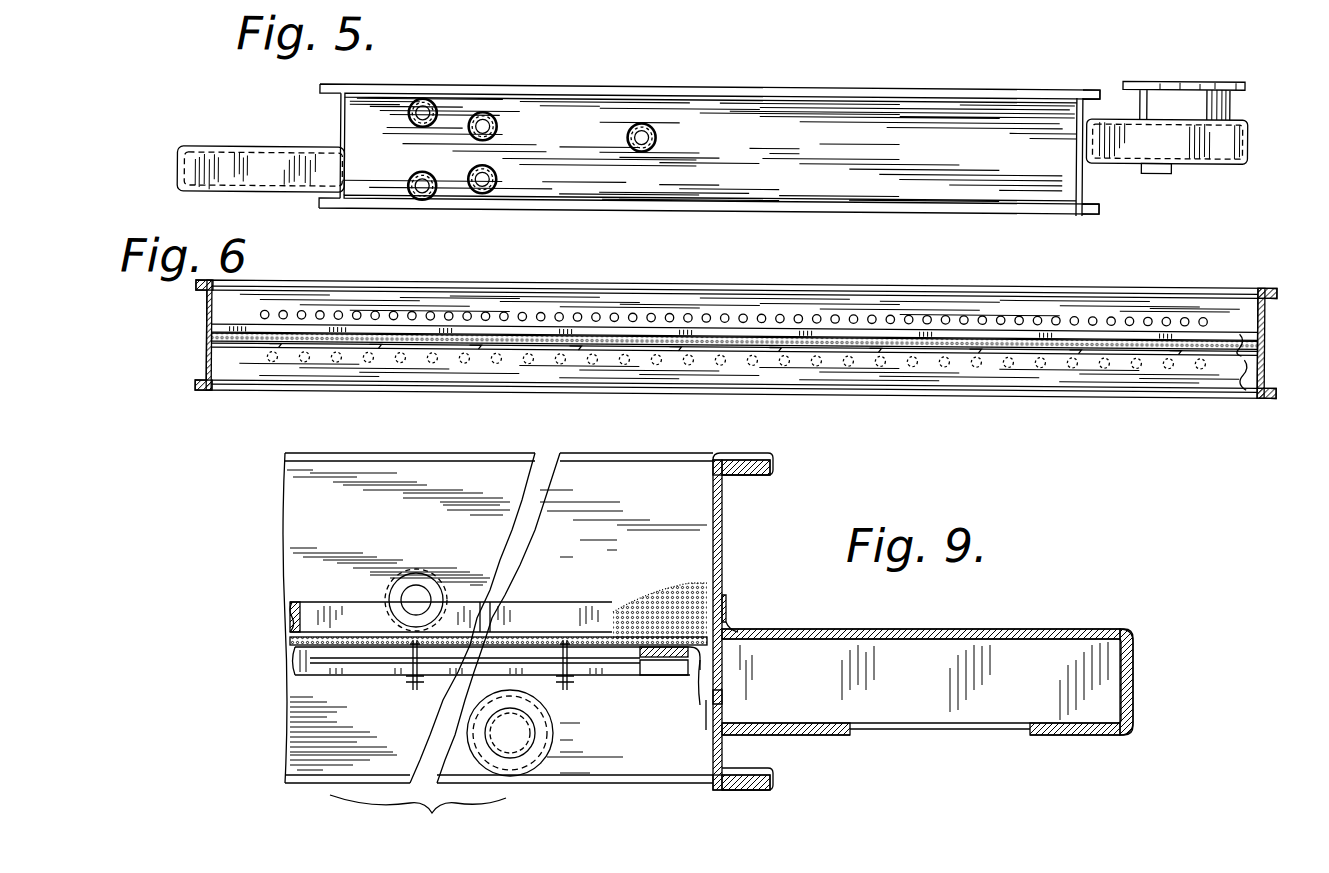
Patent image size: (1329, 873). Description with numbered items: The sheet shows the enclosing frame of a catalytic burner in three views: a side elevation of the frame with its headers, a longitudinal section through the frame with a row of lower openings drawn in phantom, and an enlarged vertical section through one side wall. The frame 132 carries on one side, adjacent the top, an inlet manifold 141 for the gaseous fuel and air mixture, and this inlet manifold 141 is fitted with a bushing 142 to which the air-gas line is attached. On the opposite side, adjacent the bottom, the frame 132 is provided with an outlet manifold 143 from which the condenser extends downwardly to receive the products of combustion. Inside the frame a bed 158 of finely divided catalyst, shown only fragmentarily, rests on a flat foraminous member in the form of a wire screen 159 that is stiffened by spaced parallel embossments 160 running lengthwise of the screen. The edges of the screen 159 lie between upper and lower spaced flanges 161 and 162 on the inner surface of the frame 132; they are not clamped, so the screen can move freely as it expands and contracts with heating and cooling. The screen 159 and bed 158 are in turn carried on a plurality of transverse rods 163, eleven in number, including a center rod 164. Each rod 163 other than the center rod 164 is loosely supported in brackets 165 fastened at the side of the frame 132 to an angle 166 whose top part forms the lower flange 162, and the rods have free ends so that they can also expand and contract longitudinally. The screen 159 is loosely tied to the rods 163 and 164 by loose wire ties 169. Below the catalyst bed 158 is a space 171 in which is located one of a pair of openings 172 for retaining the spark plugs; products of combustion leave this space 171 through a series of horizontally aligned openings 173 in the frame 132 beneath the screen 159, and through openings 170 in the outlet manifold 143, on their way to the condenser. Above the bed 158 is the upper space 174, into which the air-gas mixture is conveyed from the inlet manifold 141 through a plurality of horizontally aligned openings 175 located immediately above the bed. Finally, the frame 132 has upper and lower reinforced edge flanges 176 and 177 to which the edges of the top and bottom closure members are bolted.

In FIG. 5, the frame 132 is at (709, 150).
In FIG. 6, the frame 132 is at (641, 292).
In FIG. 9, the frame 132 is at (722, 545).
In FIG. 5, the inlet manifold 141 is at (1200, 156).
In FIG. 5, the bushing 142 is at (1230, 100).
In FIG. 5, the outlet manifold 143 is at (224, 158).
In FIG. 9, the outlet manifold 143 is at (956, 628).
In FIG. 9, the bed of finely divided catalyst 158 is at (652, 583).
In FIG. 6, the foraminous member (wire screen) 159 is at (248, 331).
In FIG. 9, the foraminous member (wire screen) 159 is at (514, 638).
In FIG. 9, the embossments 160 is at (410, 650).
In FIG. 6, the upper flange 161 is at (1240, 326).
In FIG. 9, the upper flange 161 is at (716, 598).
In FIG. 9, the lower flange 162 is at (690, 684).
In FIG. 6, the transverse rods 163 is at (357, 348).
In FIG. 9, the transverse rods 163 is at (574, 686).
In FIG. 6, the center rod 164 is at (740, 352).
In FIG. 9, the center rod 164 is at (492, 661).
In FIG. 6, the brackets 165 is at (467, 348).
In FIG. 9, the brackets 165 is at (680, 668).
In FIG. 6, the angle 166 is at (1248, 362).
In FIG. 9, the angle 166 is at (708, 705).
In FIG. 9, the wire ties 169 is at (416, 680).
In FIG. 9, the openings 170 is at (850, 736).
In FIG. 9, the space beneath the catalyst bed 171 is at (618, 741).
In FIG. 9, the openings for spark plugs 172 is at (510, 733).
In FIG. 6, the horizontally aligned openings 173 is at (1012, 362).
In FIG. 9, the horizontally aligned openings 173 is at (722, 708).
In FIG. 9, the upper space 174 is at (630, 504).
In FIG. 6, the horizontally aligned openings 175 is at (835, 317).
In FIG. 5, the upper reinforced edge flange 176 is at (1093, 92).
In FIG. 9, the upper reinforced edge flange 176 is at (757, 461).
In FIG. 5, the lower reinforced edge flange 177 is at (1092, 212).
In FIG. 9, the lower reinforced edge flange 177 is at (754, 790).